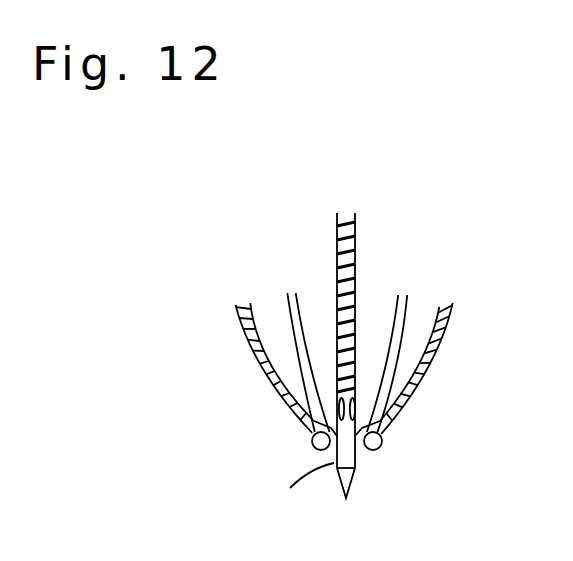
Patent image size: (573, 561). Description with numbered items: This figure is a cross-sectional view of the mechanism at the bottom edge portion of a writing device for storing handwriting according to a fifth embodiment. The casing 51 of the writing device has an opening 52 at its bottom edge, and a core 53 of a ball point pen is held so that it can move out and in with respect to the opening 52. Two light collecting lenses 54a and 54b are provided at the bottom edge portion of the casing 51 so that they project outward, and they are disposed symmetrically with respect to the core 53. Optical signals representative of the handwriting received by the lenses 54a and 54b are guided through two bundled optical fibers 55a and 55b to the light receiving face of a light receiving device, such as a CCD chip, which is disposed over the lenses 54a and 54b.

The casing 51 is at (445, 340).
The opening 52 is at (357, 445).
The core 53 is at (303, 492).
The light collecting lens 54a is at (317, 450).
The light collecting lens 54b is at (378, 452).
The bundled optical fiber 55a is at (289, 316).
The bundled optical fiber 55b is at (408, 308).